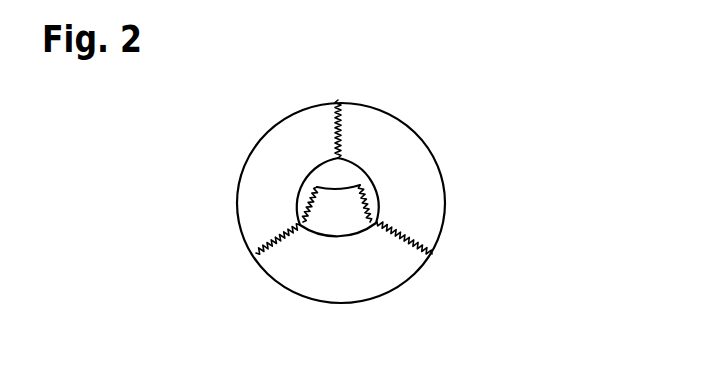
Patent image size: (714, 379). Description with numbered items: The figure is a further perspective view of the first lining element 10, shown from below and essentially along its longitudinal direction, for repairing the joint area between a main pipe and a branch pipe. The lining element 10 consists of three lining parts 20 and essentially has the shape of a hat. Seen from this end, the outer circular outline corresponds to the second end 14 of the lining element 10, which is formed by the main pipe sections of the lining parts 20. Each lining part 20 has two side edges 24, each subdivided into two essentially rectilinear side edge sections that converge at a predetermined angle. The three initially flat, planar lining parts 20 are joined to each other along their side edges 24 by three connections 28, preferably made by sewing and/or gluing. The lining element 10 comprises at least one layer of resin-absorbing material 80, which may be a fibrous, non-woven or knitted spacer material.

The first lining element 10 is at (498, 104).
The second end 14 is at (458, 155).
The lining part 20 is at (232, 148).
The side edge 24 is at (337, 120).
The connection 28 is at (343, 85).
The resin-absorbing layer 80 is at (422, 178).